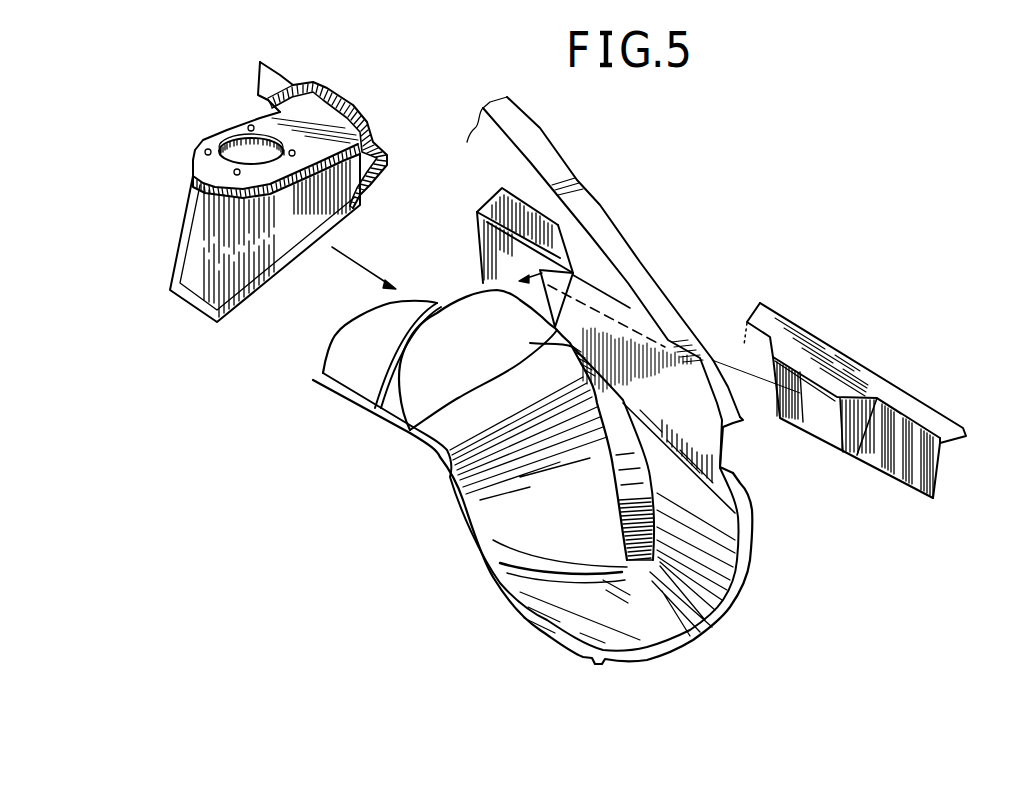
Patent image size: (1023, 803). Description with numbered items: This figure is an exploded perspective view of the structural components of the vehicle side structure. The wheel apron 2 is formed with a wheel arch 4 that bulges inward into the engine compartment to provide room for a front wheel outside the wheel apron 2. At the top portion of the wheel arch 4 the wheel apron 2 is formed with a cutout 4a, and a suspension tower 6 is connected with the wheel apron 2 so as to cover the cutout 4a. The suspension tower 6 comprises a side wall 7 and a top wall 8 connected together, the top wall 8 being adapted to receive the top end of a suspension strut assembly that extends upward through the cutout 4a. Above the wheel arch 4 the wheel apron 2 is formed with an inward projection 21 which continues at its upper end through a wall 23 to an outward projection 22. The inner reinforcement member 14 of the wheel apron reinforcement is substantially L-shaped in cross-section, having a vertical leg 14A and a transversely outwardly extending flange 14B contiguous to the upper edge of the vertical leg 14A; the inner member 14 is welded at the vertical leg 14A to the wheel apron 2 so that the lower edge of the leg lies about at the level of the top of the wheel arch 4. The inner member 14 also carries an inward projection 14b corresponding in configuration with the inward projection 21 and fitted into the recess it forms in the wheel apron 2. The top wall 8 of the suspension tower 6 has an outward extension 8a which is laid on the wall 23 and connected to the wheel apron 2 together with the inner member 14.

The wheel apron 2 is at (623, 230).
The wheel arch 4 is at (487, 493).
The cutout 4a is at (410, 440).
The suspension tower 6 is at (182, 179).
The side wall 7 is at (190, 247).
The top wall 8 is at (212, 138).
The outward extension 8a is at (322, 80).
The inner reinforcement member 14 is at (907, 487).
The vertical leg 14A is at (943, 470).
The transversely outwardly extending flange 14B is at (920, 410).
The inward projection 14b is at (820, 418).
The inward projection 21 is at (493, 257).
The outward projection 22 is at (512, 202).
The wall 23 is at (487, 233).